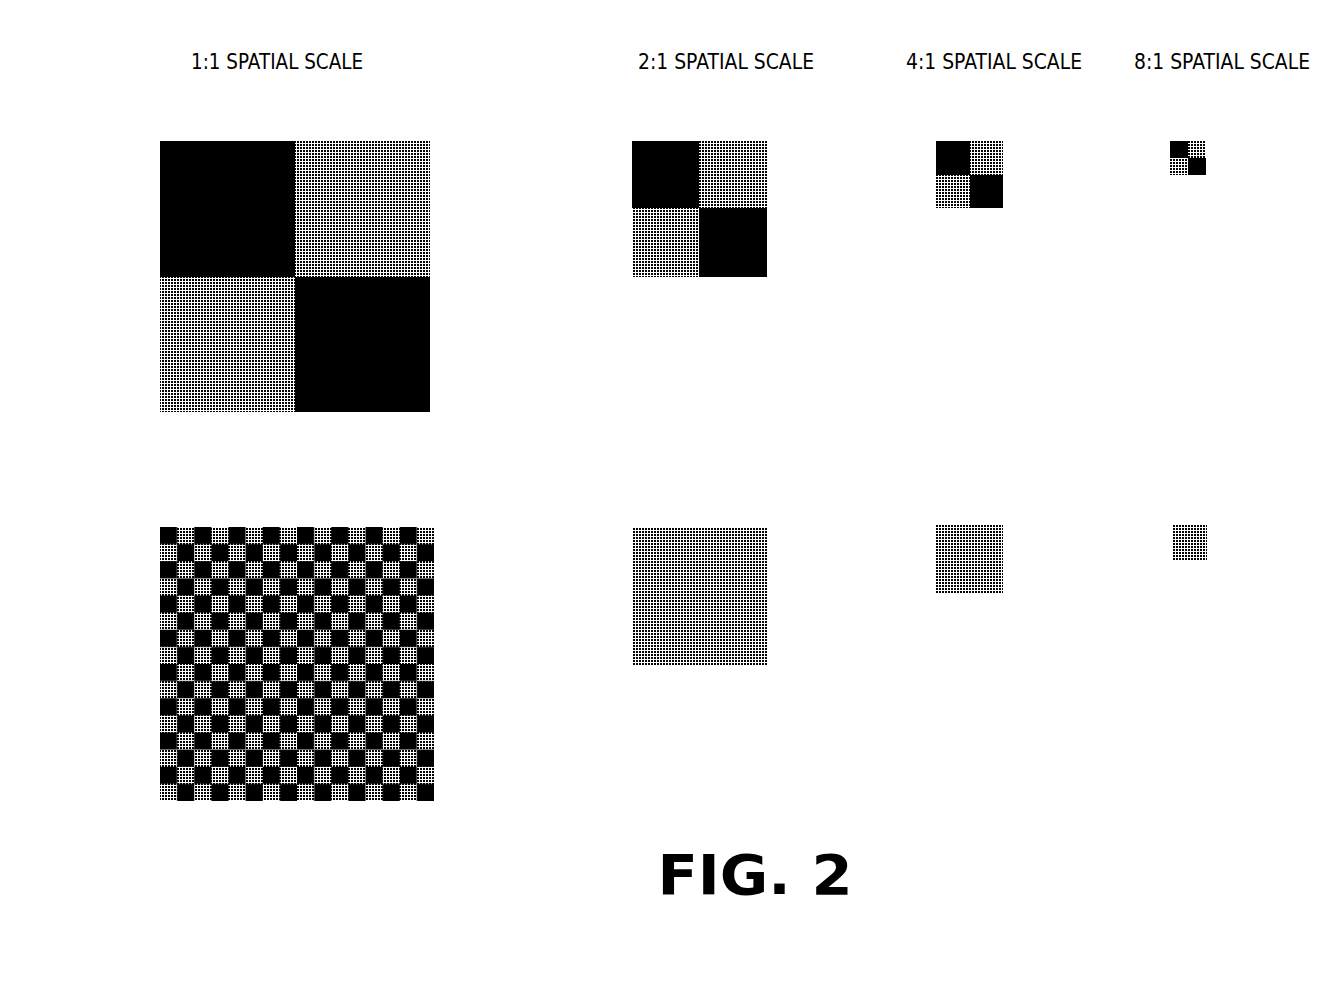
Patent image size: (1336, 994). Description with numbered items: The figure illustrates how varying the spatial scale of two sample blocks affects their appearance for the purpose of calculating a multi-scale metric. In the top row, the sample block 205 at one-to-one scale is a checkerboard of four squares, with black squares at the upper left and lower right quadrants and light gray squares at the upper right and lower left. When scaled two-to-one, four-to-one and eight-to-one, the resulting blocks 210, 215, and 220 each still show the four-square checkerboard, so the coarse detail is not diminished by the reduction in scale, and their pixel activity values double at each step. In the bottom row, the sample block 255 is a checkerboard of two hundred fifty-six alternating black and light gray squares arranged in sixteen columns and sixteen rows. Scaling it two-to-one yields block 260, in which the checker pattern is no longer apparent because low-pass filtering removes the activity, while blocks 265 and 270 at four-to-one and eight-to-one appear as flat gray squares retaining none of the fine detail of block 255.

The sample block 205 is at (383, 143).
The block 210 is at (695, 142).
The block 215 is at (992, 143).
The block 220 is at (1203, 143).
The sample block 255 is at (395, 528).
The block 260 is at (692, 527).
The block 265 is at (987, 525).
The block 270 is at (1182, 525).